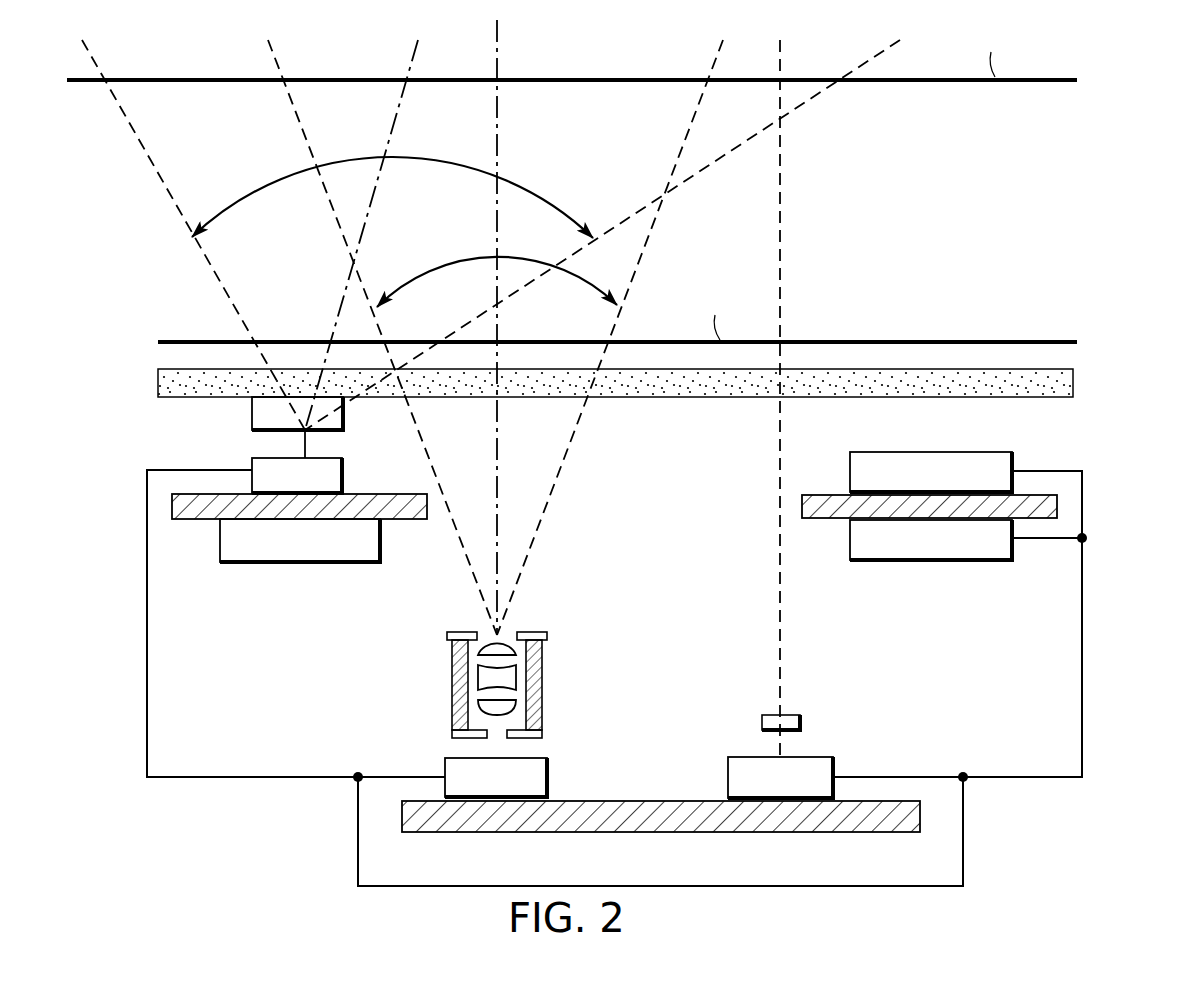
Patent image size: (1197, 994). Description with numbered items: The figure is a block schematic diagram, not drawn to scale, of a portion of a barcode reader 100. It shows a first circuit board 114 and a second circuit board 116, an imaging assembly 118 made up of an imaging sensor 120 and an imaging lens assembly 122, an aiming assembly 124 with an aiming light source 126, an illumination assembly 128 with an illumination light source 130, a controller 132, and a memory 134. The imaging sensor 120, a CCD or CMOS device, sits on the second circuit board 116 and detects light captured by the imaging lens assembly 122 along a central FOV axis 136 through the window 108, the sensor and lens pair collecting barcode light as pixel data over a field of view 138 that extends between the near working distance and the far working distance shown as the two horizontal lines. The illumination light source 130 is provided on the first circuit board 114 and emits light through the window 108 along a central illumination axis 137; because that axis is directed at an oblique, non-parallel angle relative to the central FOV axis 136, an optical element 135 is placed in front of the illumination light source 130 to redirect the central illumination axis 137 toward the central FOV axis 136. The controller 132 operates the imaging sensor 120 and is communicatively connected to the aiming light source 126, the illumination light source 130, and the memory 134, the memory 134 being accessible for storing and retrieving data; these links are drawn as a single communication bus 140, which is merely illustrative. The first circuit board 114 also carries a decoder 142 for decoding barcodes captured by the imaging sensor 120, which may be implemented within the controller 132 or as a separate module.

The barcode reader 100 is at (1104, 330).
The window 108 is at (687, 398).
The first circuit board 114 is at (172, 510).
The second circuit board 116 is at (458, 815).
The imaging assembly 118 is at (501, 714).
The imaging sensor 120 is at (547, 775).
The imaging lens assembly 122 is at (573, 681).
The aiming assembly 124 is at (813, 741).
The aiming light source 126 is at (728, 777).
The illumination assembly 128 is at (285, 445).
The illumination light source 130 is at (343, 470).
The controller 132 is at (850, 472).
The memory 134 is at (850, 545).
The optical element 135 is at (344, 428).
The central FOV axis 136 is at (496, 137).
The central illumination axis 137 is at (395, 107).
The field of view 138 is at (457, 266).
The communication bus 140 is at (1018, 780).
The decoder 142 is at (300, 563).